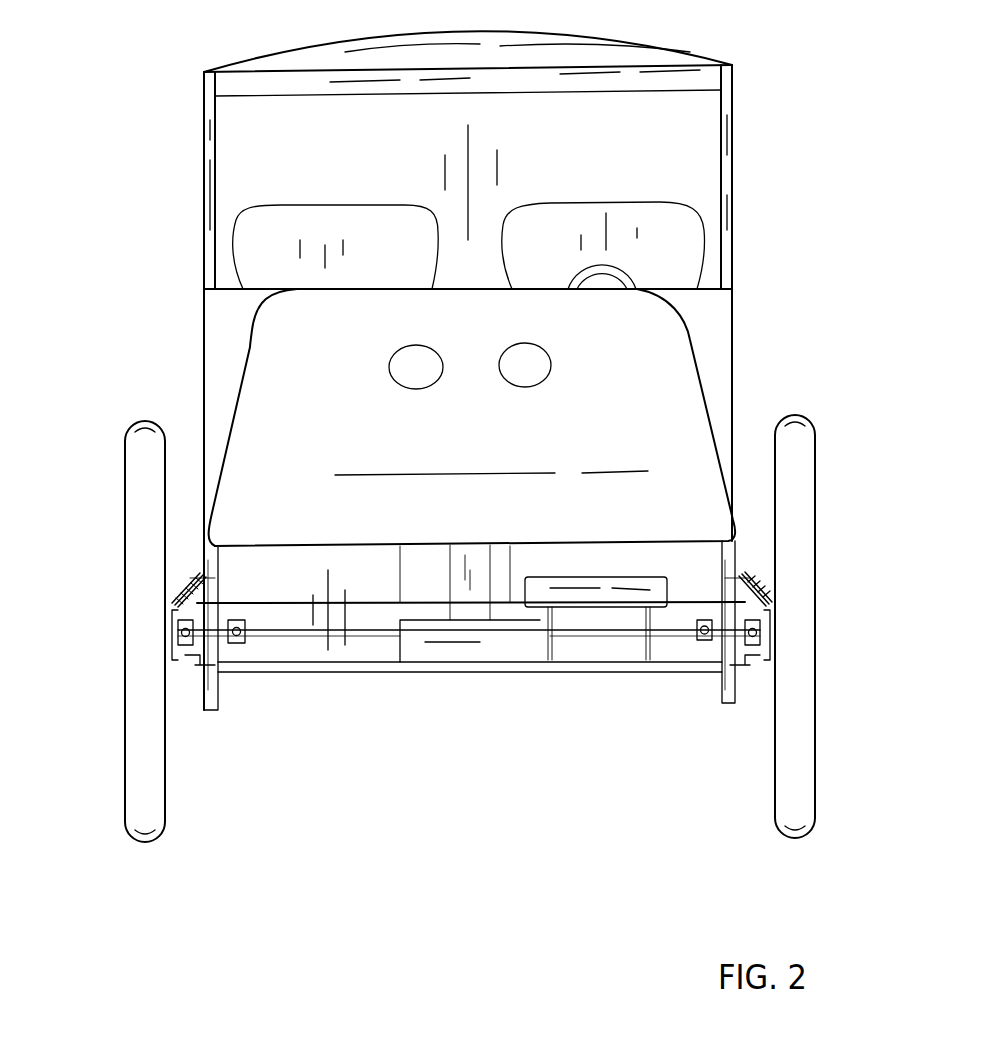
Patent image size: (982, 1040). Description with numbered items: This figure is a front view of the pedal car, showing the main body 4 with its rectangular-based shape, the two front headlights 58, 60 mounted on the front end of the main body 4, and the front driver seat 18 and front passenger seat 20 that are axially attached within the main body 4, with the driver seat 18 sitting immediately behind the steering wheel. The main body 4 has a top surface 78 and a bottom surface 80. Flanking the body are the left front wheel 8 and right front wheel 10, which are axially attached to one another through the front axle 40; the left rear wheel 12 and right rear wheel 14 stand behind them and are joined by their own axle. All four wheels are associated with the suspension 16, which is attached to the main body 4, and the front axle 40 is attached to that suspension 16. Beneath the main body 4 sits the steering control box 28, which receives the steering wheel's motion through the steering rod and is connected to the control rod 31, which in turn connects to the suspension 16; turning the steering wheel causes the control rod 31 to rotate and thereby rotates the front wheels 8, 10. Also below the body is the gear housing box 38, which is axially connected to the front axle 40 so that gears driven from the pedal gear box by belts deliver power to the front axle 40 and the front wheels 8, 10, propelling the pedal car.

The main body 4 is at (357, 490).
The left front wheel 8 is at (836, 626).
The right front wheel 10 is at (96, 631).
The left rear wheel 12 is at (815, 563).
The right rear wheel 14 is at (125, 586).
The suspension 16 is at (172, 600).
The front driver seat 18 is at (690, 237).
The front passenger seat 20 is at (245, 248).
The steering control box 28 is at (613, 587).
The control rod 31 is at (313, 595).
The gear housing box 38 is at (472, 653).
The front axle 40 is at (320, 630).
The front headlight 58 is at (405, 365).
The front headlight 60 is at (540, 365).
The top surface 78 is at (400, 546).
The bottom surface 80 is at (510, 546).